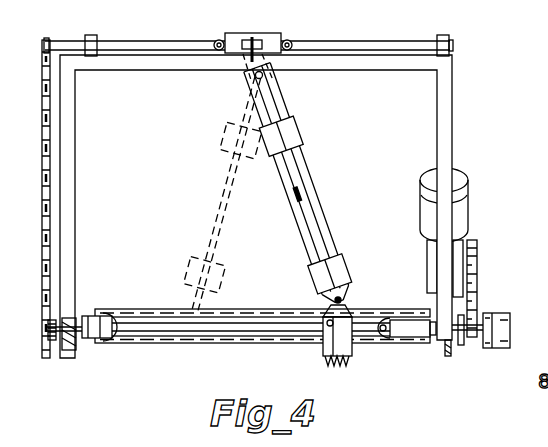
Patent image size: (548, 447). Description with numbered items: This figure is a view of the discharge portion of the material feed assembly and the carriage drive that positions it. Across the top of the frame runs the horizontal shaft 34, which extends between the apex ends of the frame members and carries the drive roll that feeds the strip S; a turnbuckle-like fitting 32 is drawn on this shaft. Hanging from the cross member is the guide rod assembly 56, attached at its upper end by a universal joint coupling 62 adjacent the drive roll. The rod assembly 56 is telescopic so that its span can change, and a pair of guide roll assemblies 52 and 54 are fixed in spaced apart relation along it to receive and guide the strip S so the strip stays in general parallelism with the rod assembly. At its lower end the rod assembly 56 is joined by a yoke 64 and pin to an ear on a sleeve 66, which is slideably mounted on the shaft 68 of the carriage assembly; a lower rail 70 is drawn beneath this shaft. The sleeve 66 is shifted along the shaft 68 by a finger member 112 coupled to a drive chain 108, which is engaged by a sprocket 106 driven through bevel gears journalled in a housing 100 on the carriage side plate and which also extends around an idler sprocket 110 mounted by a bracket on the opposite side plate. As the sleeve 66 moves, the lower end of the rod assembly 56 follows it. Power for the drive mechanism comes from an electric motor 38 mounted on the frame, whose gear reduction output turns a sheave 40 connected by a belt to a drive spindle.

The turnbuckle 32 is at (268, 30).
The horizontal shaft 34 is at (382, 40).
The electric motor 38 is at (472, 214).
The sheave 40 is at (480, 283).
The guide roll assembly 52 is at (300, 136).
The guide roll assembly 54 is at (342, 262).
The guide rod assembly 56 is at (316, 180).
The strip S is at (328, 212).
The universal joint coupling 62 is at (254, 77).
The yoke 64 is at (350, 310).
The sleeve 66 is at (348, 348).
The shaft 68 is at (272, 340).
The lower rail 70 is at (122, 350).
The housing 100 is at (100, 316).
The sprocket 106 is at (162, 298).
The drive chain 108 is at (290, 316).
The idler sprocket 110 is at (378, 316).
The finger member 112 is at (326, 358).